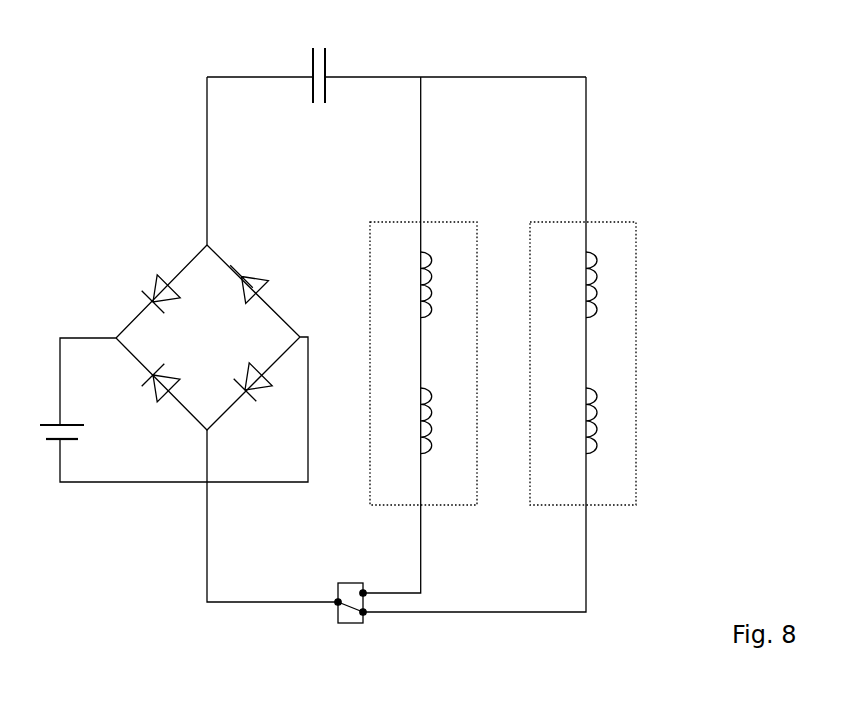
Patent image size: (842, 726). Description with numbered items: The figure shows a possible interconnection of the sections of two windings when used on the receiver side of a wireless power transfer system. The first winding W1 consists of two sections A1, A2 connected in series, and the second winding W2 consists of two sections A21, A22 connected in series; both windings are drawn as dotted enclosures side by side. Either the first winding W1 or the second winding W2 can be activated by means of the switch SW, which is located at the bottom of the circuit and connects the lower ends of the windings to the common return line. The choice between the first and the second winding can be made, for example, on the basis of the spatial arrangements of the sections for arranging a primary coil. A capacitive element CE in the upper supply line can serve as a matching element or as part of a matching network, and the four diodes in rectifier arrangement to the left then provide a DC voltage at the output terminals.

The capacitive element CE is at (326, 64).
The first section of first winding A1 is at (427, 262).
The second section of first winding A2 is at (427, 448).
The first section of second winding A21 is at (595, 262).
The second section of second winding A22 is at (595, 450).
The first winding W1 is at (370, 492).
The second winding W2 is at (528, 502).
The switch SW is at (350, 625).